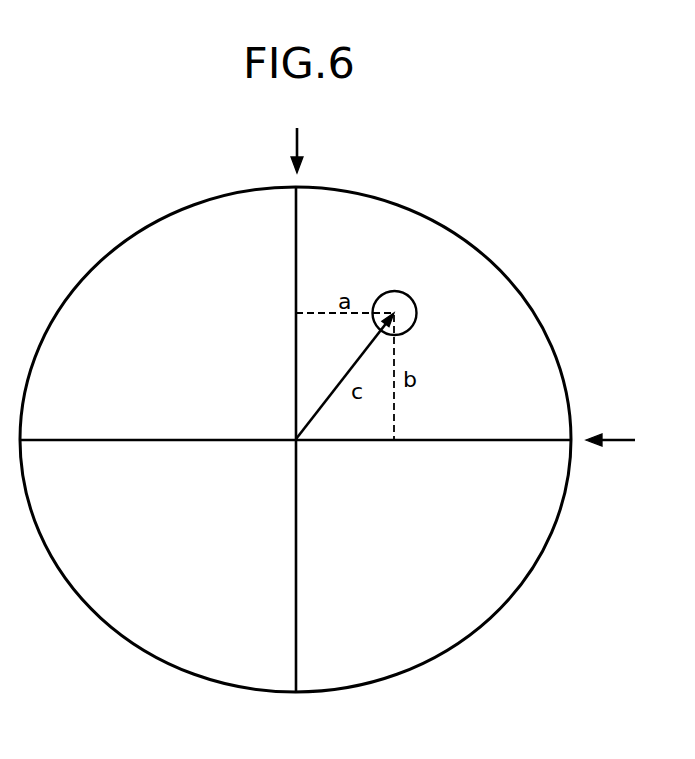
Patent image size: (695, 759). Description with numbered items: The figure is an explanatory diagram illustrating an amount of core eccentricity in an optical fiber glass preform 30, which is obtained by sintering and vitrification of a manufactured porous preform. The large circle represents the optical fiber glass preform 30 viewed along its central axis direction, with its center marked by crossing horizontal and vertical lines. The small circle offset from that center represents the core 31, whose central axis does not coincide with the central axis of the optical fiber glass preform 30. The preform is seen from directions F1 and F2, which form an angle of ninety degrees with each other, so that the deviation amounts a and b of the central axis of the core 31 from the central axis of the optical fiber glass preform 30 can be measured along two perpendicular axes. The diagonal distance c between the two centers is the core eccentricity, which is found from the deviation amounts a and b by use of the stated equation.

The optical fiber glass preform 30 is at (423, 213).
The core 31 is at (395, 292).
The direction F1 is at (299, 140).
The direction F2 is at (616, 438).